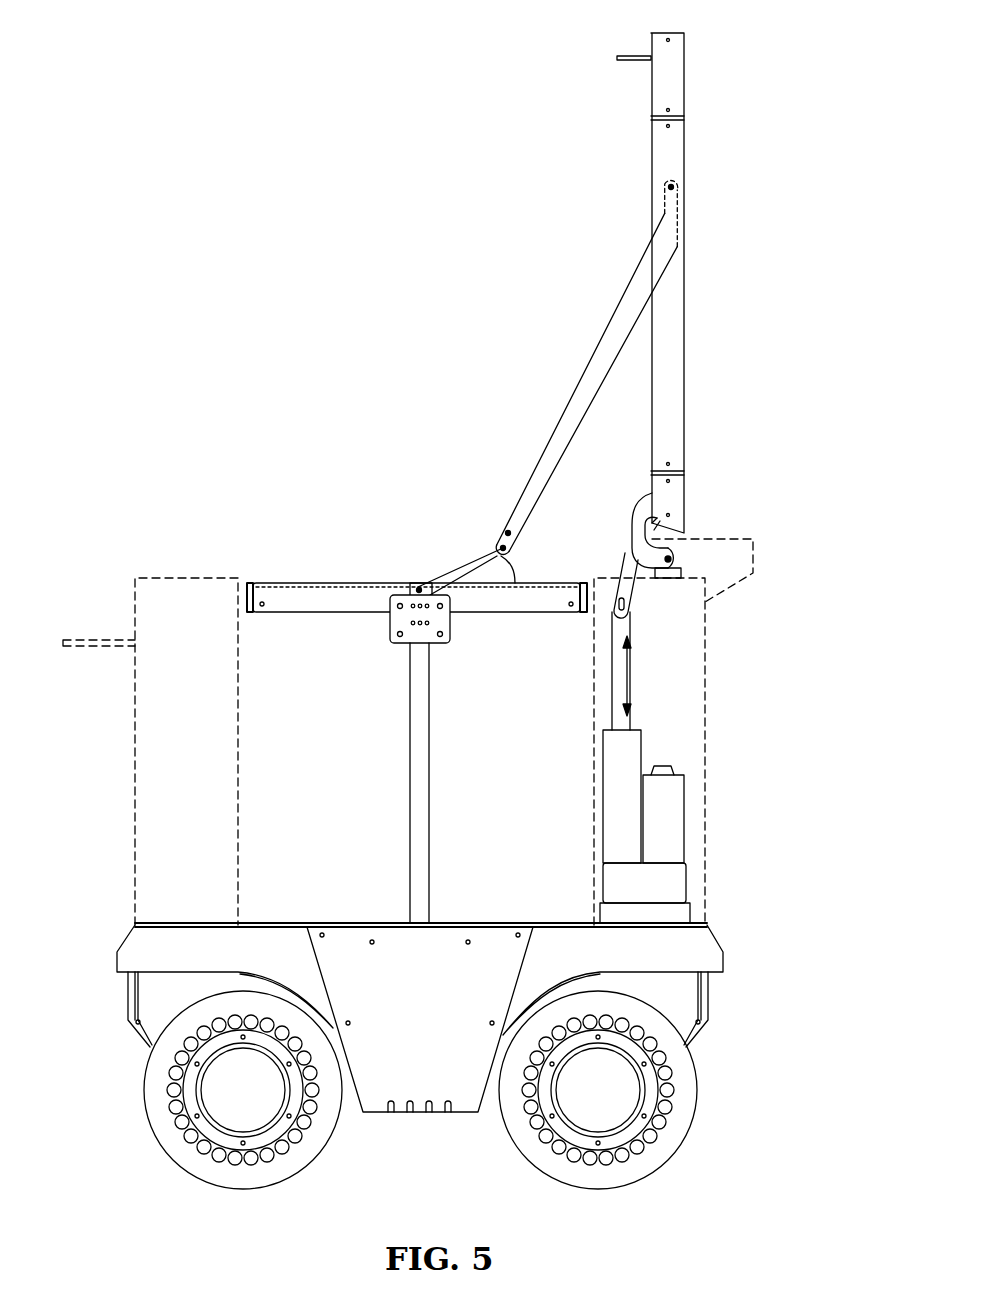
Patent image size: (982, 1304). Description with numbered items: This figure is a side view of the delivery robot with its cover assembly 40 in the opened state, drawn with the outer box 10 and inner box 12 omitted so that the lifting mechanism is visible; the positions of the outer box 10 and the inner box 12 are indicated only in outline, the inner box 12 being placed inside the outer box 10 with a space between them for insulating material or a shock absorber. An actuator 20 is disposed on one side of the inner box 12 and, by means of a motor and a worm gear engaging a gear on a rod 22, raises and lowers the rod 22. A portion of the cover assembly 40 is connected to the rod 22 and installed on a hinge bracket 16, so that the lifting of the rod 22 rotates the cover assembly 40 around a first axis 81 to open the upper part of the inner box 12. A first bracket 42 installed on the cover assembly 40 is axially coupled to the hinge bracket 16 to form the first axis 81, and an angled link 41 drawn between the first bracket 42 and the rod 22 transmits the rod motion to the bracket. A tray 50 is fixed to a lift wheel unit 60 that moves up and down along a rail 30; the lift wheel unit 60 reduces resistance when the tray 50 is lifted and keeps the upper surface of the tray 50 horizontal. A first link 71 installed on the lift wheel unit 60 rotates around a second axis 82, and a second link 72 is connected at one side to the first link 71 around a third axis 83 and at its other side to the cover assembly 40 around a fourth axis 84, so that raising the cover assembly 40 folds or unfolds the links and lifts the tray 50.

The outer box 10 is at (135, 752).
The inner box 12 is at (237, 752).
The hinge bracket 16 is at (678, 582).
The actuator 20 is at (672, 806).
The rod 22 is at (611, 663).
The rail 30 is at (410, 784).
The cover assembly 40 is at (685, 294).
The drive link 41 is at (630, 605).
The first bracket 42 is at (636, 530).
The tray 50 is at (322, 582).
The lift wheel unit 60 is at (392, 628).
The first link 71 is at (461, 566).
The second link 72 is at (576, 372).
The first axis 81 is at (673, 556).
The second axis 82 is at (416, 583).
The third axis 83 is at (502, 540).
The fourth axis 84 is at (668, 186).